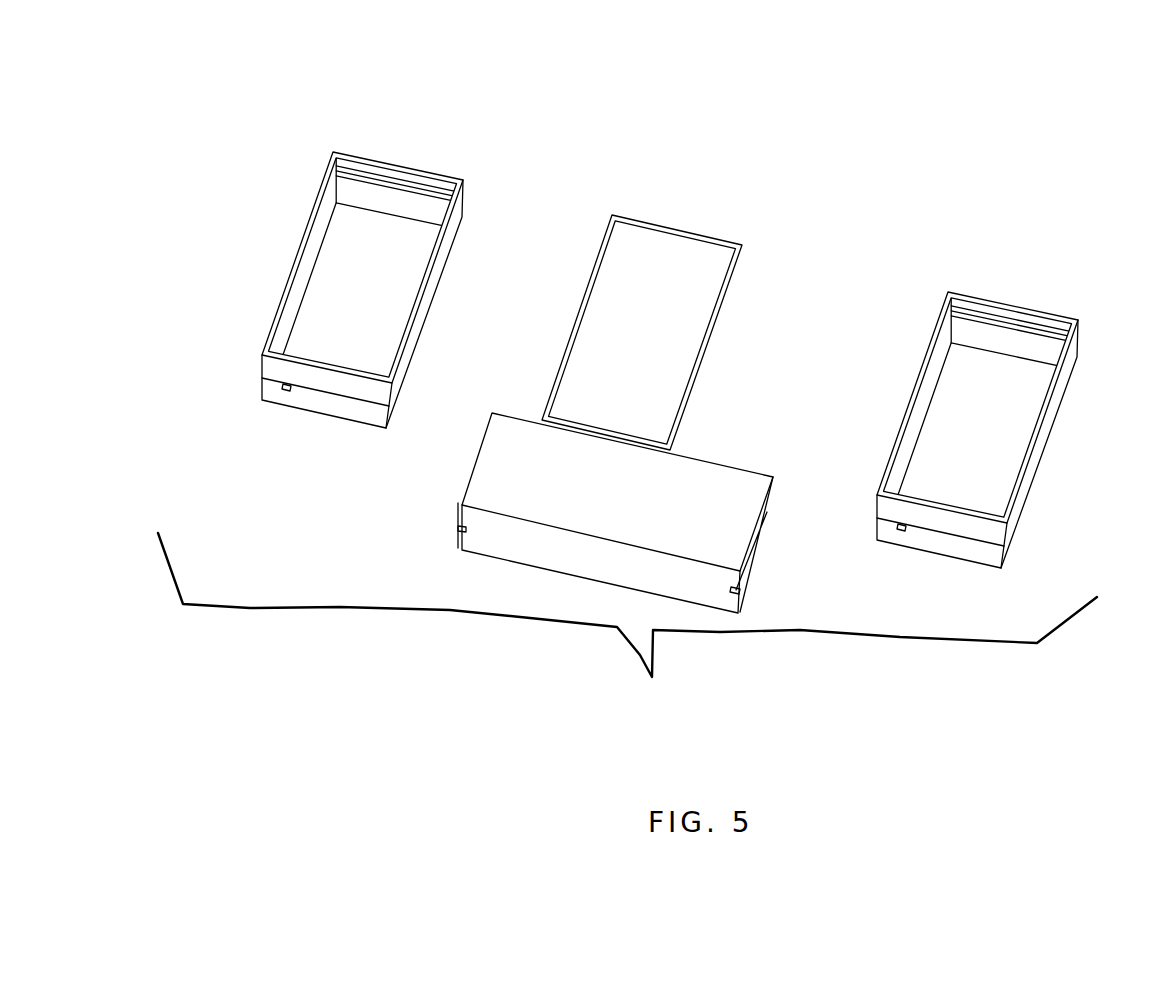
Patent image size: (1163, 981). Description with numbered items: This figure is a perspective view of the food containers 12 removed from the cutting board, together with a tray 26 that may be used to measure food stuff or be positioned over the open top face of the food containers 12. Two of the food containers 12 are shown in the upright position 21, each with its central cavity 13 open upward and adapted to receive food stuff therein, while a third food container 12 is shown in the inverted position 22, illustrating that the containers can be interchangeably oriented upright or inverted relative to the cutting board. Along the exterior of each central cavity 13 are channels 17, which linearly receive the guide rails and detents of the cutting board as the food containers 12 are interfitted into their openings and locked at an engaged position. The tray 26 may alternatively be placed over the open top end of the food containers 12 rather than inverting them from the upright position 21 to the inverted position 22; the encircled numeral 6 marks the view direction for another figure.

The food container 12 is at (426, 147).
The upright position 21 is at (284, 251).
The central cavity 13 is at (370, 306).
The channel 17 is at (292, 386).
The inverted position 22 is at (734, 459).
The tray 26 is at (687, 253).
The view direction indicator for FIG. 6 is at (897, 523).